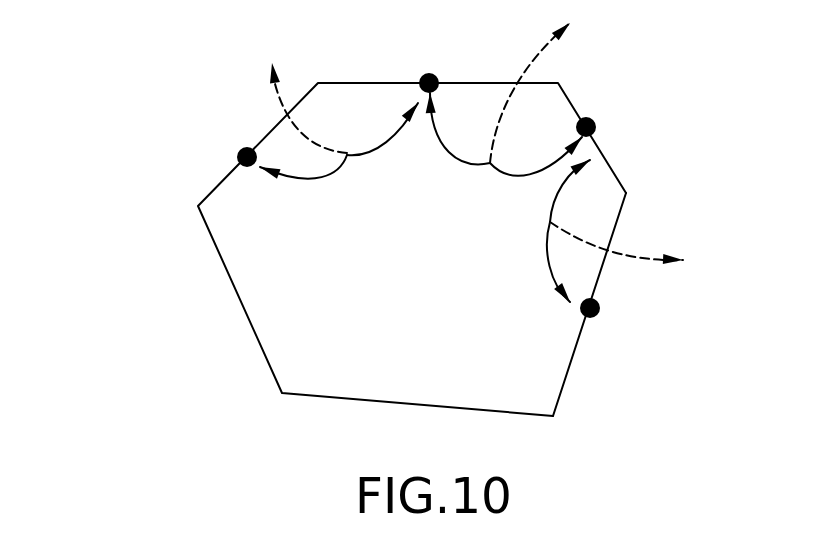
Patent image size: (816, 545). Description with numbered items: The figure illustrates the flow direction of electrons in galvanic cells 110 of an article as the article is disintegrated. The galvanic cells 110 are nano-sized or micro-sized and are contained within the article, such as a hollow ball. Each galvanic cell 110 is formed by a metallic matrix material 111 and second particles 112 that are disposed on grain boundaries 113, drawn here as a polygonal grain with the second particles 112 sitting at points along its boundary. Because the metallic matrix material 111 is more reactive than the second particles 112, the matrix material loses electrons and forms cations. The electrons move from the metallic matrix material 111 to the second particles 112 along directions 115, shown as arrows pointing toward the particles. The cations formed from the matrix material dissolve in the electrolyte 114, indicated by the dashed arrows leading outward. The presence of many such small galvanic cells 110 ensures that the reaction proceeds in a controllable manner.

The galvanic cells 110 is at (153, 125).
The metallic matrix material 111 is at (397, 360).
The second particles 112 is at (597, 127).
The grain boundaries 113 is at (568, 372).
The electrolyte 114 is at (648, 255).
The directions 115 is at (310, 197).